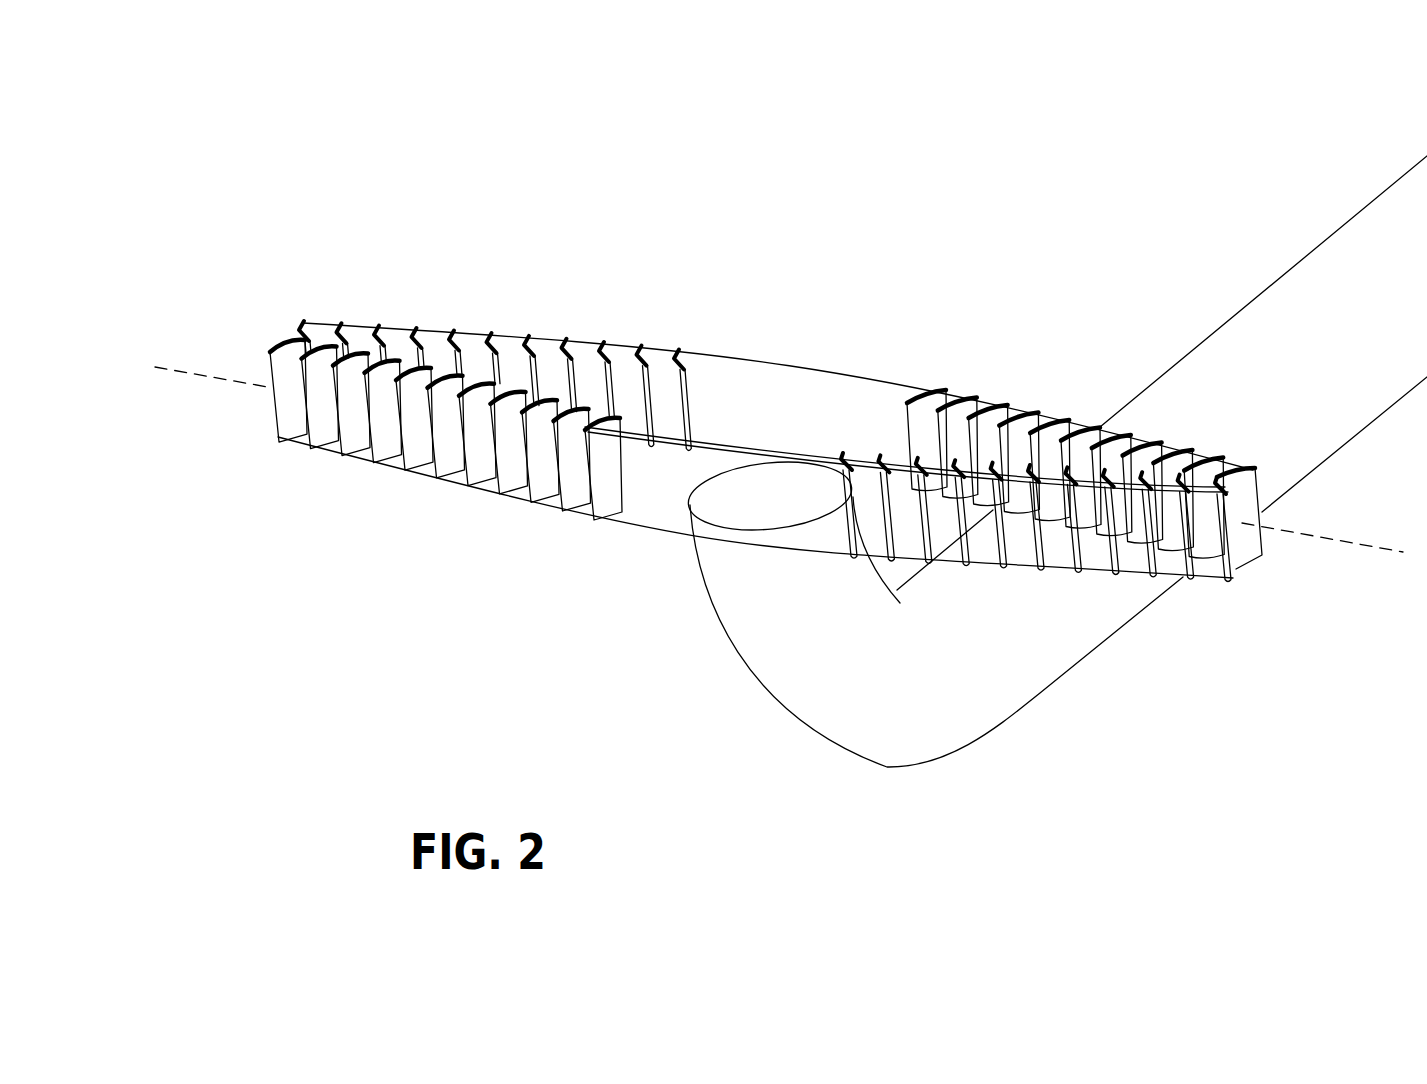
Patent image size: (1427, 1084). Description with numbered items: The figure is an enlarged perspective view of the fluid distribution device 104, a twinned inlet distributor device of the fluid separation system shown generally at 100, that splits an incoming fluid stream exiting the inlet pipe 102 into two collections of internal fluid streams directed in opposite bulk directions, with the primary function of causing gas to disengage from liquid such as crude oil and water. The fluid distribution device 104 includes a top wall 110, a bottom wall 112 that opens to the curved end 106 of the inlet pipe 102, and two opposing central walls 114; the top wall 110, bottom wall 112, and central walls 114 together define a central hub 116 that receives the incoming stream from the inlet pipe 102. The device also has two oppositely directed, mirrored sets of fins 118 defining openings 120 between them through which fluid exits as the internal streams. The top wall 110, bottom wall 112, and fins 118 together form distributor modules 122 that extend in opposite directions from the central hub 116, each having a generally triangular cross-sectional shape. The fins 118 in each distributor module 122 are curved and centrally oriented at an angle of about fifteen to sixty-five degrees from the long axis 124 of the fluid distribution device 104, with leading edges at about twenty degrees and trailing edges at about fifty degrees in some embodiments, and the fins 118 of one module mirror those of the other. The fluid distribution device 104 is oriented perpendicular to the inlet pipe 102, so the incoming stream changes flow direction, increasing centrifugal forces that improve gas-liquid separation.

The fan assembly 100 is at (1179, 249).
The inlet pipe 102 is at (1370, 205).
The fluid distribution device 104 is at (687, 447).
The curved end 106 is at (905, 767).
The top wall 110 is at (790, 383).
The bottom wall 112 is at (655, 541).
The central walls 114 is at (765, 531).
The central hub 116 is at (887, 362).
The fins 118 is at (280, 440).
The openings 120 is at (1207, 597).
The distributor modules 122 is at (448, 311).
The long axis 124 is at (185, 368).